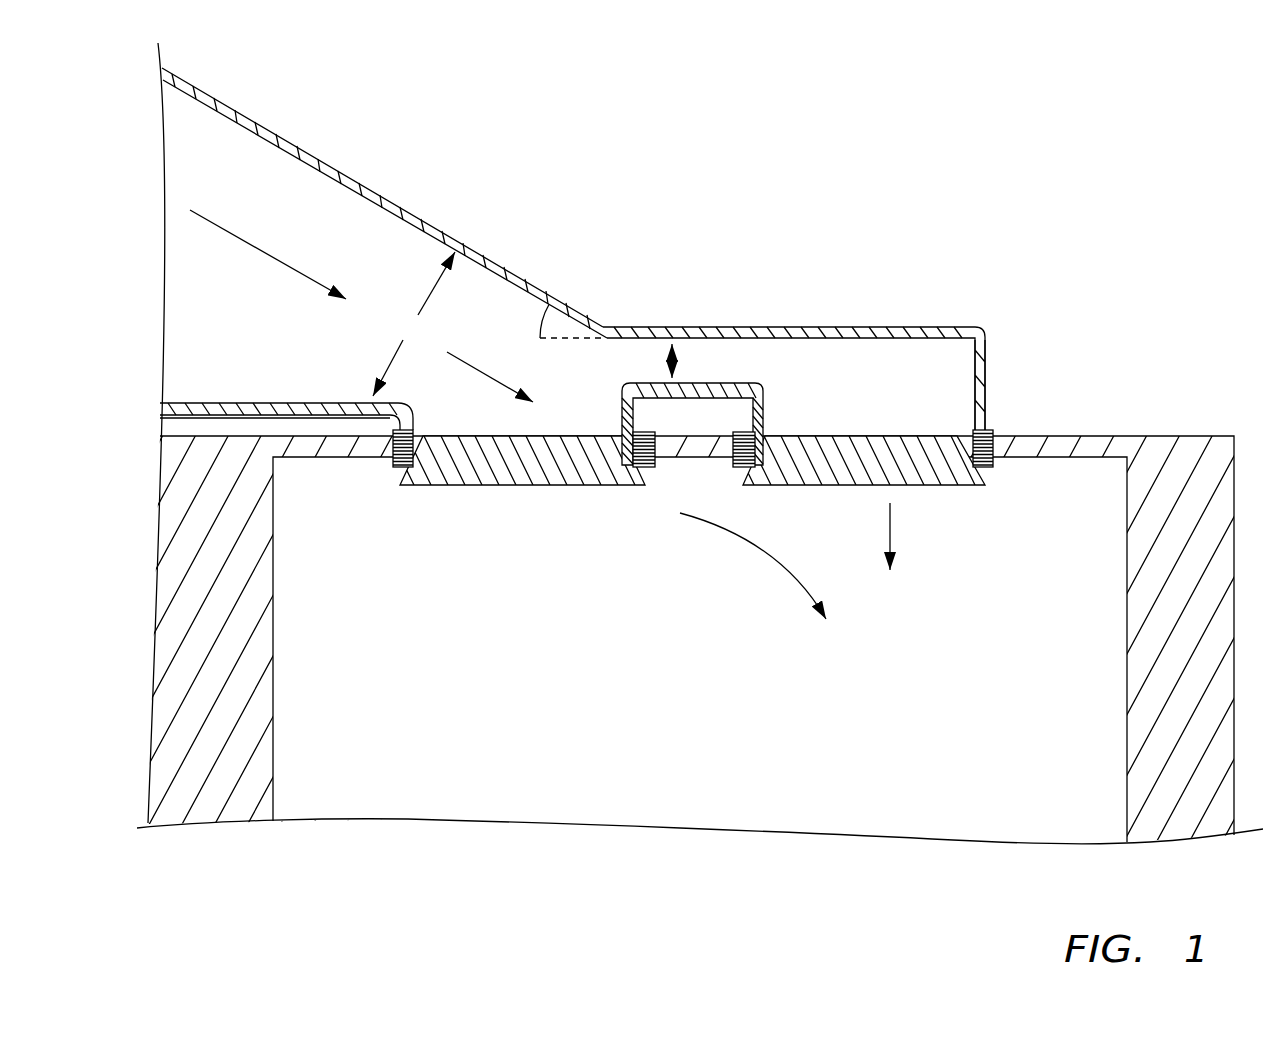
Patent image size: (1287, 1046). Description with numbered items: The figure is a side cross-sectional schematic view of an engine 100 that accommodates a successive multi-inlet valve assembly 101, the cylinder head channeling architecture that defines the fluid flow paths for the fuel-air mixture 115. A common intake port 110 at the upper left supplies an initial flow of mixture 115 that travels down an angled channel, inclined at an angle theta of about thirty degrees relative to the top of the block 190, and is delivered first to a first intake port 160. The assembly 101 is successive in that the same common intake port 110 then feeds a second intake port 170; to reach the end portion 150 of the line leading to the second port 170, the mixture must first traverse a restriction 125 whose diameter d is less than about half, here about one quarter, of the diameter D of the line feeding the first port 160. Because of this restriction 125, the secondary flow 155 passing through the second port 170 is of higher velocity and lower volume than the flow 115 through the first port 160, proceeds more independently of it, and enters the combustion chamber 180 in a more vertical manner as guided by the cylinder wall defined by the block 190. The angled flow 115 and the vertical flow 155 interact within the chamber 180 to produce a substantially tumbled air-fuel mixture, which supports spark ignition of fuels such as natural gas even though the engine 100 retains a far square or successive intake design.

The engine 100 is at (722, 140).
The successive multi-inlet valve assembly 101 is at (402, 192).
The common intake port 110 is at (256, 182).
The fuel-air mixture 115 is at (254, 278).
The restriction 125 is at (722, 322).
The end portion 150 is at (984, 333).
The secondary flow 155 is at (893, 540).
The first intake port 160 is at (480, 490).
The second intake port 170 is at (955, 485).
The combustion chamber 180 is at (554, 725).
The block 190 is at (221, 623).